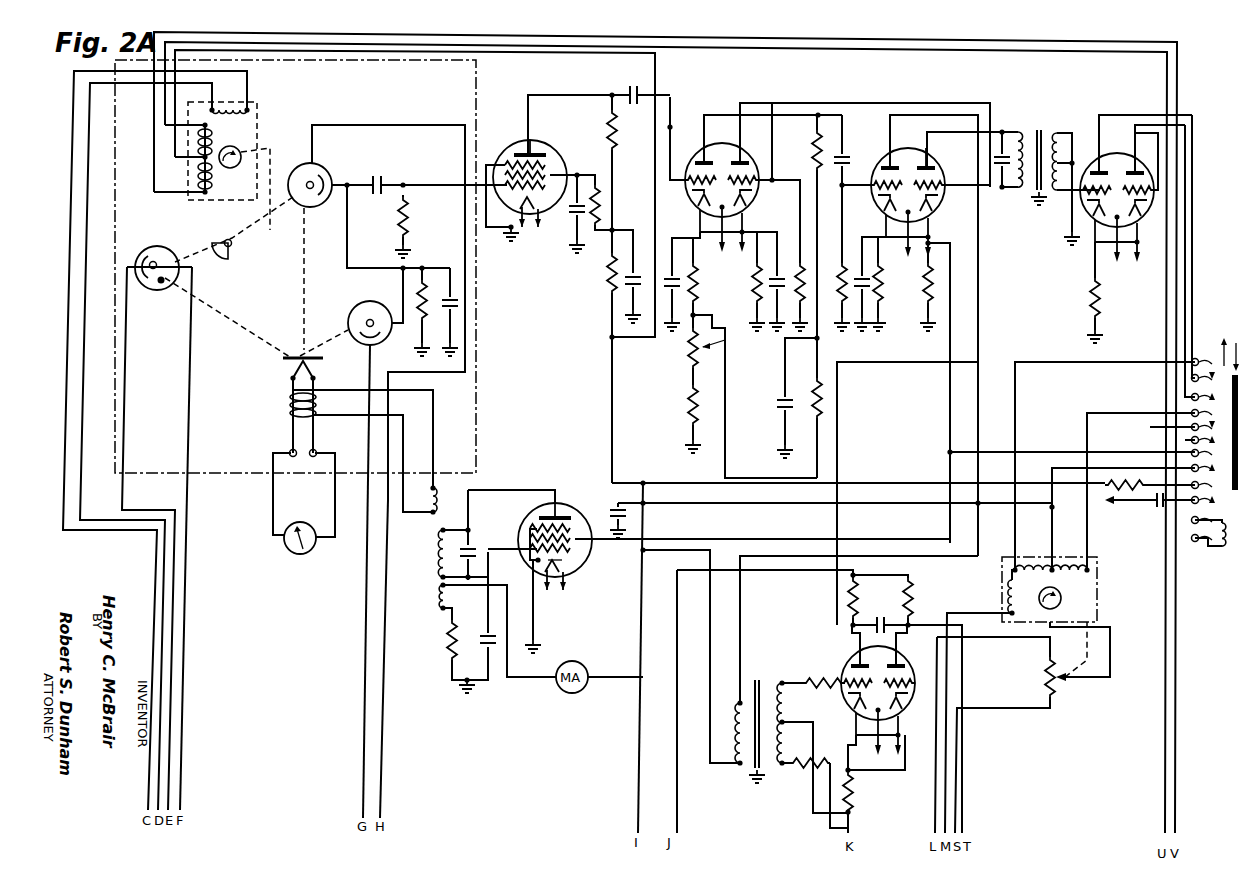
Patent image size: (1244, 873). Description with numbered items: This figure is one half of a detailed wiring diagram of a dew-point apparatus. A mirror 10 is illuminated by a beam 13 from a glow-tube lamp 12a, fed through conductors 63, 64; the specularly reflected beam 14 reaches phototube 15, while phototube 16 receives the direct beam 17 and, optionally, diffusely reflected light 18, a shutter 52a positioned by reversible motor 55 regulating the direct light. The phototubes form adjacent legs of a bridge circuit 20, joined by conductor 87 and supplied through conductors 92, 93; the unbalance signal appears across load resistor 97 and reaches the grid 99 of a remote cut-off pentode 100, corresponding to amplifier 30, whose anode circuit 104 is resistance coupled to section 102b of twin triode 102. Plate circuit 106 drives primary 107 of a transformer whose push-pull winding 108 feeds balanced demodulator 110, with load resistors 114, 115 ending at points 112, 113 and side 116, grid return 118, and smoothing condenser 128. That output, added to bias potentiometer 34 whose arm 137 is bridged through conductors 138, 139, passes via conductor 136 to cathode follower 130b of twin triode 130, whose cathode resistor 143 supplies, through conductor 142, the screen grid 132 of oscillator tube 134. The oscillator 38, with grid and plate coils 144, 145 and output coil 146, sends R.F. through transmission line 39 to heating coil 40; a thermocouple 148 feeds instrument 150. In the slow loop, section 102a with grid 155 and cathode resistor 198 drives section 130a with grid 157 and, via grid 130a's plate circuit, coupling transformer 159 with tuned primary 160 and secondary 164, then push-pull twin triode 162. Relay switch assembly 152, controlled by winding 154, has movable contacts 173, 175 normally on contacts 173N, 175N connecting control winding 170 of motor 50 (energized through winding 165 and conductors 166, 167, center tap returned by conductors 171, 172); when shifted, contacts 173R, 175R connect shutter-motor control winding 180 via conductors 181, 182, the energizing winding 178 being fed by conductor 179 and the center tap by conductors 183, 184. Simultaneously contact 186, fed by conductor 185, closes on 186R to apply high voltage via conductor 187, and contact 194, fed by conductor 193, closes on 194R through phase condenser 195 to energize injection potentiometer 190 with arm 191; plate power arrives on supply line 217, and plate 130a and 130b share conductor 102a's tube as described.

The mirror 10 is at (282, 358).
The lamp 12a is at (154, 246).
The beam of light 13 is at (233, 322).
The specularly reflected beam 14 is at (337, 339).
The phototube 15 is at (365, 303).
The phototube 16 is at (318, 173).
The beam of light 17 is at (216, 235).
The diffusely reflected light 18 is at (309, 271).
The phototube bridge circuit 20 is at (326, 120).
The amplifier 30 is at (548, 231).
The potentiometer 34 is at (1045, 677).
The R. F. oscillator 38 is at (517, 480).
The transmission line 39 is at (405, 456).
The mirror heating coil 40 is at (289, 410).
The reversible motor 50 is at (1099, 601).
The shutter 52a is at (230, 262).
The reversible motor 55 is at (258, 106).
The conductor 63 is at (124, 395).
The conductor 64 is at (190, 404).
The conductor 87 is at (348, 218).
The conductor 92 is at (385, 731).
The conductor 93 is at (365, 703).
The load resistor 97 is at (425, 278).
The grid 99 is at (520, 226).
The voltage amplifier tube 100 is at (545, 151).
The twin triode 102 is at (716, 143).
The triode section 102a is at (690, 178).
The triode section 102b is at (746, 158).
The anode circuit 104 is at (578, 79).
The plate circuit 106 is at (916, 90).
The primary 107 is at (735, 711).
The push-pull output winding 108 is at (782, 682).
The twin triode vacuum tube 110 is at (858, 666).
The outer end 112 is at (873, 617).
The outer end 113 is at (913, 619).
The load resistor 114 is at (848, 583).
The load resistor 115 is at (913, 592).
The side of A. C. source 116 is at (679, 786).
The connection 118 is at (813, 722).
The filter condenser 128 is at (905, 644).
The twin triode 130 is at (911, 149).
The triode section 130a is at (878, 185).
The triode section 130b is at (931, 159).
The screen grid 132 is at (566, 566).
The oscillator tube 134 is at (549, 500).
The conductor 136 is at (890, 365).
The movable arm 137 is at (1068, 685).
The conductor 138 is at (991, 637).
The conductor 139 is at (975, 711).
The conductor 142 is at (886, 541).
The cathode resistor 143 is at (925, 292).
The grid coil 144 is at (440, 601).
The plate coil 145 is at (432, 557).
The output coil 146 is at (430, 509).
The thermocouple 148 is at (290, 378).
The indicating instrument 150 is at (295, 557).
The relay switch assembly 152 is at (1219, 545).
The relay winding 154 is at (1222, 562).
The grid 155 is at (695, 194).
The grid 157 is at (880, 196).
The coupling transformer 159 is at (1031, 128).
The primary 160 is at (1016, 191).
The twin triode 162 is at (1116, 150).
The center tapped secondary 164 is at (1062, 141).
The winding 165 is at (1010, 586).
The conductor 166 is at (948, 791).
The conductor 167 is at (960, 821).
The control winding 170 is at (1055, 566).
The conductor 171 is at (1055, 522).
The conductor 172 is at (766, 506).
The movable contact 173 is at (1217, 378).
The fixed contact 173N is at (1160, 362).
The stationary contact 173R is at (1160, 378).
The movable contact 175 is at (1160, 427).
The fixed contact 175N is at (1162, 397).
The stationary contact 175R is at (1100, 413).
The energizing winding 178 is at (230, 108).
The conductor 179 is at (156, 634).
The control winding 180 is at (203, 148).
The conductor 181 is at (882, 45).
The conductor 182 is at (845, 55).
The conductor 183 is at (512, 56).
The conductor 184 is at (614, 413).
The conductor 185 is at (948, 450).
The movable contact 186 is at (1185, 440).
The stationary contact 186R is at (1160, 468).
The conductor 187 is at (1052, 470).
The potentiometer 190 is at (688, 346).
The adjustable arm 191 is at (727, 350).
The conductor 193 is at (880, 483).
The movable contact 194 is at (1158, 477).
The stationary contact 194R is at (1172, 524).
The phase-adjusting condenser 195 is at (1156, 508).
The cathode resistor 198 is at (695, 286).
The positive plate supply line 217 is at (638, 742).